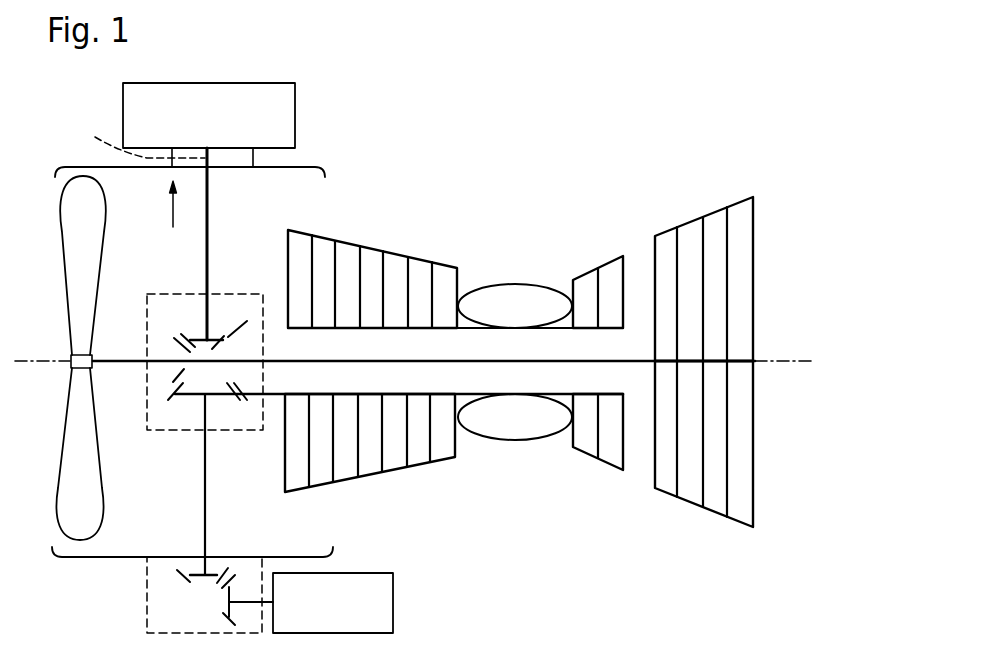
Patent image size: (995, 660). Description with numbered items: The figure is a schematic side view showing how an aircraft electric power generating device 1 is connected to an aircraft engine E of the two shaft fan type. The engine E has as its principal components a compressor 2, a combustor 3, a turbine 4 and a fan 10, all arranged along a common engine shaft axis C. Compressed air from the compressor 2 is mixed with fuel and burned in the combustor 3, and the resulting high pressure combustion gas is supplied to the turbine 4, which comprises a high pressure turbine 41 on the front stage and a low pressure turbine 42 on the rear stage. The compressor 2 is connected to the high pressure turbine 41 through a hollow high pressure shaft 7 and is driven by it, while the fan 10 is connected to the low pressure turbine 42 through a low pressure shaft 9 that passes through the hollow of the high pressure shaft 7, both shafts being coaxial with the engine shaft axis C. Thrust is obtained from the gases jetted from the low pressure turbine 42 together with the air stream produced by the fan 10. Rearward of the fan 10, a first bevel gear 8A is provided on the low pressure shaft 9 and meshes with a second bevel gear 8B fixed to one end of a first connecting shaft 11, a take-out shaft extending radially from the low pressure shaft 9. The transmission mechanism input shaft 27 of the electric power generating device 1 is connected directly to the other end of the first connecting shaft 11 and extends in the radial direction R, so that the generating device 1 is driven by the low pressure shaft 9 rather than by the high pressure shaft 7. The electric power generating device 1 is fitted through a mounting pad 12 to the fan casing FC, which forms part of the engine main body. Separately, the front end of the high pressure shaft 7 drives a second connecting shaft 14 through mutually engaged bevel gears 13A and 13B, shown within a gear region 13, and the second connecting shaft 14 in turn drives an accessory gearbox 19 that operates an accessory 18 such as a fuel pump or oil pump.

The aircraft electric power generating device 1 is at (297, 97).
The compressor 2 is at (377, 249).
The combustor 3 is at (515, 283).
The turbine 4 is at (663, 319).
The high pressure shaft 7 is at (562, 407).
The first bevel gear 8A is at (178, 358).
The second bevel gear 8B is at (192, 336).
The low pressure shaft 9 is at (642, 366).
The fan 10 is at (62, 248).
The first connecting shaft 11 is at (205, 241).
The mounting pad 12 is at (233, 157).
The gearbox 13 is at (205, 362).
The bevel gear 13A is at (231, 325).
The bevel gear 13B is at (184, 402).
The second connecting shaft 14 is at (207, 520).
The accessory 18 is at (394, 600).
The accessory gearbox 19 is at (147, 586).
The transmission mechanism input shaft 27 is at (132, 135).
The high pressure turbine 41 is at (612, 270).
The low pressure turbine 42 is at (704, 346).
The engine shaft axis C is at (793, 356).
The aircraft engine E is at (437, 260).
The fan casing FC is at (310, 166).
The radial direction R is at (168, 206).